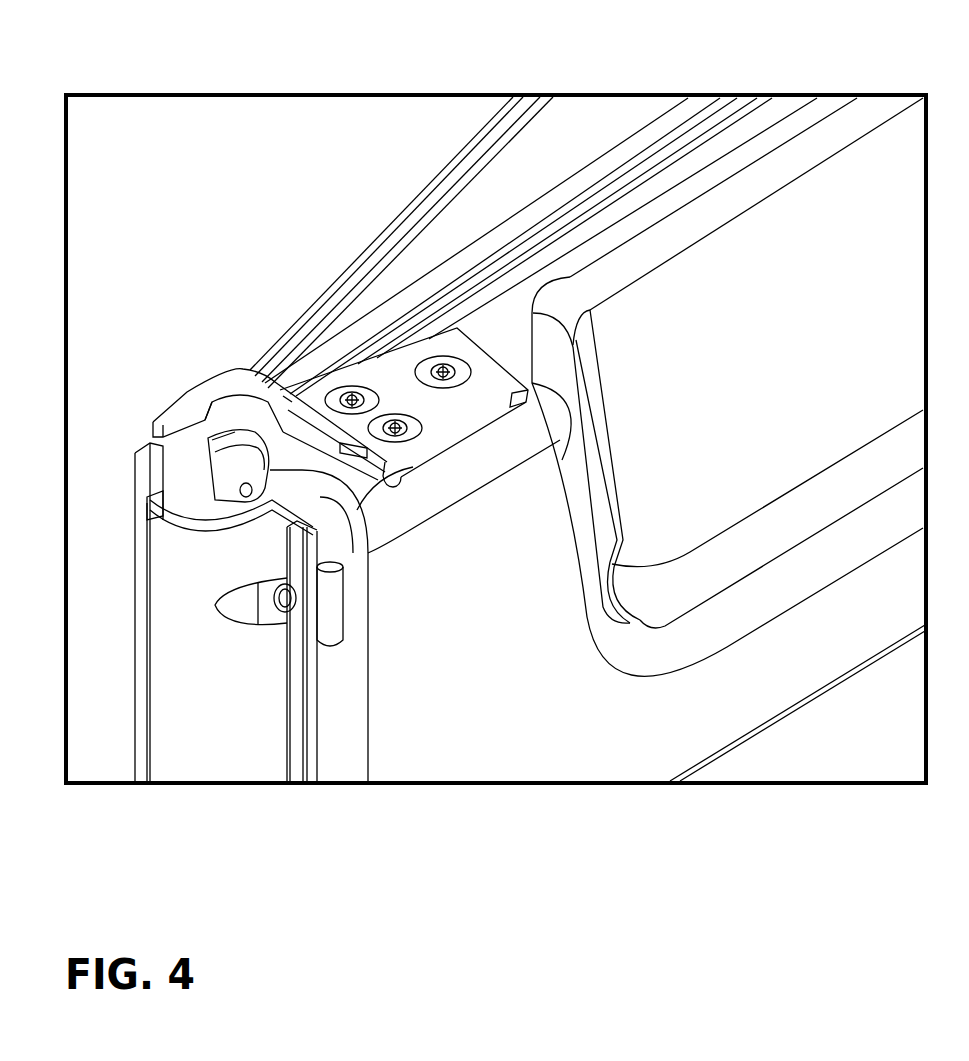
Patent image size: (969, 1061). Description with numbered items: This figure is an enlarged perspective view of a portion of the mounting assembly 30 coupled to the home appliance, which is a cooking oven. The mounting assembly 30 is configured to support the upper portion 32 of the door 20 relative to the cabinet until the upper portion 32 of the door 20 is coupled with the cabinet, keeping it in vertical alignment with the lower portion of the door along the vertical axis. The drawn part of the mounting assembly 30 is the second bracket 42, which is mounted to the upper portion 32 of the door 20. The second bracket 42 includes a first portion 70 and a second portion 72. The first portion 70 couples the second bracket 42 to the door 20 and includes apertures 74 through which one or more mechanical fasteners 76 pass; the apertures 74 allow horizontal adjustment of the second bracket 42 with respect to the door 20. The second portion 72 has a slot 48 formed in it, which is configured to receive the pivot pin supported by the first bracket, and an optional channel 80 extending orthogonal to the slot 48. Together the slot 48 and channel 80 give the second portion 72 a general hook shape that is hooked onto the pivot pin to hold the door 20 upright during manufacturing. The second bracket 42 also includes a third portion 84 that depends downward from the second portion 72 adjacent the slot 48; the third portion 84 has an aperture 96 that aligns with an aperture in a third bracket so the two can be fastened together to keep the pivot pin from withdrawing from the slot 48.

The door 20 is at (138, 675).
The mounting assembly 30 is at (168, 152).
The upper portion 32 is at (635, 148).
The second bracket 42 is at (422, 470).
The slot 48 is at (290, 397).
The first portion 70 is at (485, 395).
The second portion 72 is at (212, 382).
The apertures 74 is at (388, 390).
The mechanical fasteners 76 is at (452, 362).
The channel 80 is at (212, 438).
The third portion 84 is at (240, 505).
The aperture 96 is at (268, 472).